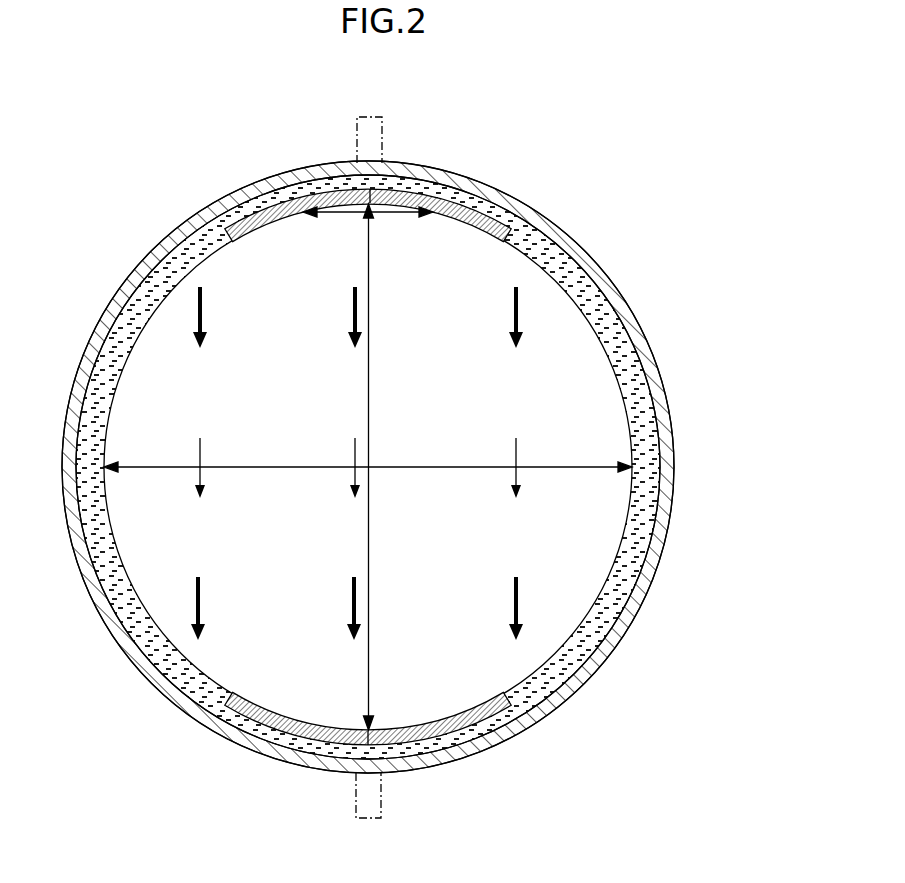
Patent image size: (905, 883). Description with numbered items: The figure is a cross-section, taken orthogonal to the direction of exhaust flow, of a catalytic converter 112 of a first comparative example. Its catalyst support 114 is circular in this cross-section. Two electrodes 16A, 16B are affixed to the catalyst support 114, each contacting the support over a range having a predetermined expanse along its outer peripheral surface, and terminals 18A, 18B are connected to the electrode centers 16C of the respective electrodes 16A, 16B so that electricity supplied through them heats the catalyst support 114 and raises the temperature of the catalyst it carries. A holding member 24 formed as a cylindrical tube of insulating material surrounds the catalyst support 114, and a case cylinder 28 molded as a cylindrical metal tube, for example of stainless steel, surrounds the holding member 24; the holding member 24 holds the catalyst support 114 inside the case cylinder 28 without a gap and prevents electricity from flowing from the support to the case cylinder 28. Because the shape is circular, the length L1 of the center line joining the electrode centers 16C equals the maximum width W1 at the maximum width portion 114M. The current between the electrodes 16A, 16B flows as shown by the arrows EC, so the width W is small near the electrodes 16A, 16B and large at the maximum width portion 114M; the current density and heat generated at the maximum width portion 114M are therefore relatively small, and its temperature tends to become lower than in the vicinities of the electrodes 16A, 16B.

The catalytic converter 112 is at (190, 774).
The catalyst support 114 is at (632, 434).
The maximum width portion 114M is at (632, 461).
The electrode 16A is at (328, 190).
The electrode 16B is at (298, 765).
The electrode center 16C is at (373, 190).
The terminal 18A is at (384, 140).
The terminal 18B is at (382, 797).
The holding member 24 is at (490, 213).
The case cylinder 28 is at (208, 209).
The arrows showing current flow EC is at (203, 313).
The length of center line L1 is at (370, 645).
The maximum width W1 is at (466, 468).
The width W is at (400, 215).